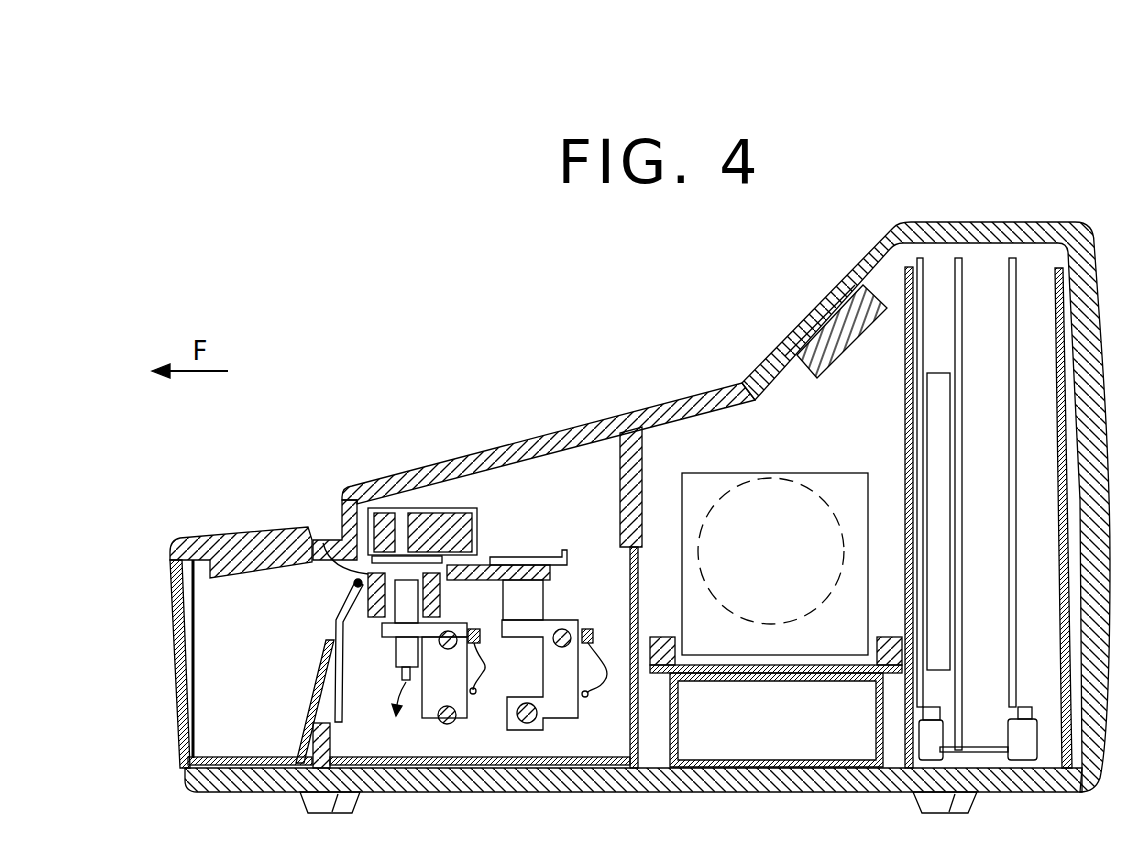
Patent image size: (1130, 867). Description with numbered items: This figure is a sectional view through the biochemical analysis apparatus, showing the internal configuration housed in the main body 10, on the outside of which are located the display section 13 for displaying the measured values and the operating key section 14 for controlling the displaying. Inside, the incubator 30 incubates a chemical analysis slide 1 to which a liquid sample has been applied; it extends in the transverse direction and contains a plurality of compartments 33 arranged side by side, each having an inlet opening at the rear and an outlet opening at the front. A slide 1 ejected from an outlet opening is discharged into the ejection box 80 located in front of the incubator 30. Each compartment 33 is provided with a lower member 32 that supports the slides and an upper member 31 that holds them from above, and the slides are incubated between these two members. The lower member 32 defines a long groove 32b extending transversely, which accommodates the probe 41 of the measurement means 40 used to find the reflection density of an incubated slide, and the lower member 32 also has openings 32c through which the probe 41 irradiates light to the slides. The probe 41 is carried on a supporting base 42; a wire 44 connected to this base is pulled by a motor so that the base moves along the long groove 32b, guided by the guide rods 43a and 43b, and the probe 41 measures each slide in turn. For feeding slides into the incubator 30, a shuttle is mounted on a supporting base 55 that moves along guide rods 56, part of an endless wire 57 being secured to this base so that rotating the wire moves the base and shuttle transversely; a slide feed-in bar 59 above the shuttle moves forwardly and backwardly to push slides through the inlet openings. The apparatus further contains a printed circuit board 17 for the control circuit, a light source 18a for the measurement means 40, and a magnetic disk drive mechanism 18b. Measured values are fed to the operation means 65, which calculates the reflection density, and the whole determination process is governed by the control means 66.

The chemical analysis slide 1 is at (487, 527).
The main body 10 is at (480, 792).
The display section 13 is at (815, 310).
The operating key section 14 is at (257, 543).
The printed circuit board 17 is at (971, 485).
The light source 18a is at (797, 565).
The magnetic disk drive mechanism 18b is at (807, 737).
The incubator 30 is at (476, 484).
The upper member 31 is at (402, 505).
The lower member 32 is at (362, 580).
The long groove 32b is at (507, 564).
The openings 32c is at (440, 505).
The compartments 33 is at (338, 527).
The measurement means 40 is at (358, 652).
The probe 41 is at (348, 598).
The supporting base 42 is at (423, 702).
The guide rod 43a is at (408, 668).
The guide rod 43b is at (440, 726).
The wire 44 is at (485, 671).
The supporting base 55 is at (538, 726).
The guide rods 56 is at (568, 630).
The endless wire 57 is at (588, 697).
The slide feed-in bar 59 is at (540, 553).
The operation means 65 is at (950, 582).
The control means 66 is at (937, 400).
The ejection box 80 is at (176, 684).